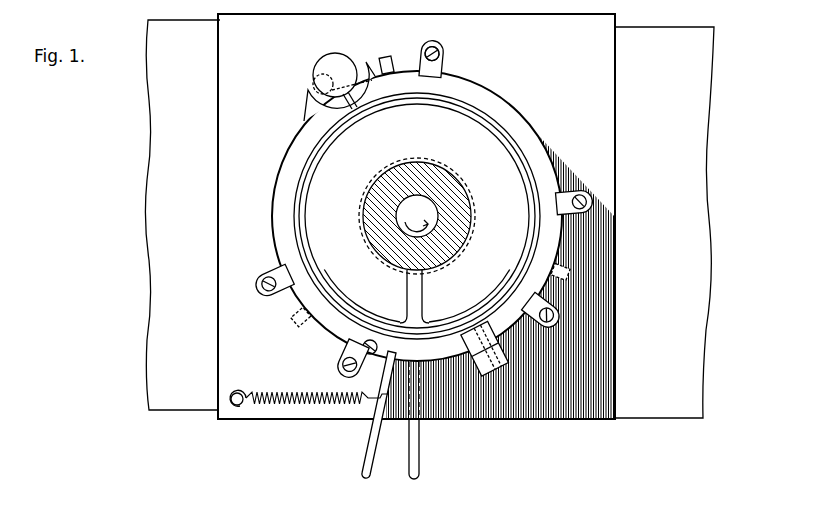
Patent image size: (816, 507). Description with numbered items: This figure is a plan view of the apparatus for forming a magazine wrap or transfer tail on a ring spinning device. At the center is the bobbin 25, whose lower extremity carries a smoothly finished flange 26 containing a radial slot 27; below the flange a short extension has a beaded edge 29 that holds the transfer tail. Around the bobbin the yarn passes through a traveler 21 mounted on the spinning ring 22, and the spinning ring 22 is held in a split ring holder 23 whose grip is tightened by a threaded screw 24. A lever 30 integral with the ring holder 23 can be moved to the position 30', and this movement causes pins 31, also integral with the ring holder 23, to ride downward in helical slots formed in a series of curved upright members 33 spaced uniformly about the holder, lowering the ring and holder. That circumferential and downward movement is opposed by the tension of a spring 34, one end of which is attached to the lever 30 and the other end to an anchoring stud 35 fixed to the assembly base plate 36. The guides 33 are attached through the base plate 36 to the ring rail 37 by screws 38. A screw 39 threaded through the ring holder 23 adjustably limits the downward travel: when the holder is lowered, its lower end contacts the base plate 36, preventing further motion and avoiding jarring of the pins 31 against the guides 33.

The traveler 21 is at (322, 297).
The spinning ring 22 is at (308, 275).
The split ring holder 23 is at (398, 207).
The threaded screw 24 is at (478, 345).
The bobbin 25 is at (412, 172).
The flange 26 is at (482, 132).
The radial slot 27 is at (415, 302).
The beaded edge 29 is at (468, 205).
The lever 30 is at (359, 414).
The lever position 30' is at (435, 420).
The pins 31 is at (420, 58).
The curved upright members 33 is at (380, 65).
The spring 34 is at (278, 406).
The anchoring stud 35 is at (236, 392).
The assembly base plate 36 is at (243, 50).
The ring rail 37 is at (182, 405).
The screws 38 is at (438, 50).
The screw 39 is at (342, 360).